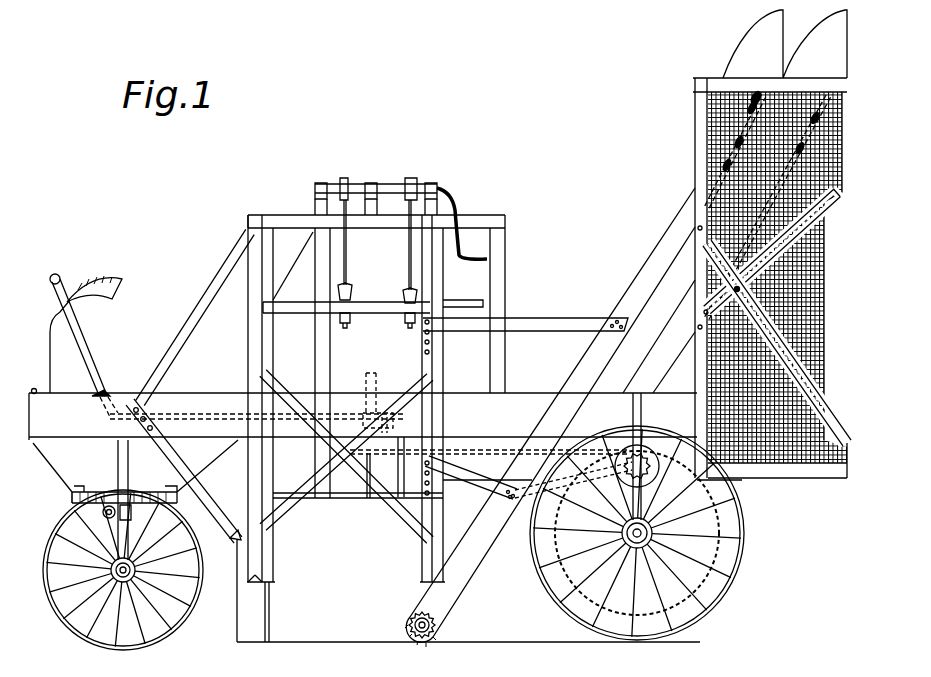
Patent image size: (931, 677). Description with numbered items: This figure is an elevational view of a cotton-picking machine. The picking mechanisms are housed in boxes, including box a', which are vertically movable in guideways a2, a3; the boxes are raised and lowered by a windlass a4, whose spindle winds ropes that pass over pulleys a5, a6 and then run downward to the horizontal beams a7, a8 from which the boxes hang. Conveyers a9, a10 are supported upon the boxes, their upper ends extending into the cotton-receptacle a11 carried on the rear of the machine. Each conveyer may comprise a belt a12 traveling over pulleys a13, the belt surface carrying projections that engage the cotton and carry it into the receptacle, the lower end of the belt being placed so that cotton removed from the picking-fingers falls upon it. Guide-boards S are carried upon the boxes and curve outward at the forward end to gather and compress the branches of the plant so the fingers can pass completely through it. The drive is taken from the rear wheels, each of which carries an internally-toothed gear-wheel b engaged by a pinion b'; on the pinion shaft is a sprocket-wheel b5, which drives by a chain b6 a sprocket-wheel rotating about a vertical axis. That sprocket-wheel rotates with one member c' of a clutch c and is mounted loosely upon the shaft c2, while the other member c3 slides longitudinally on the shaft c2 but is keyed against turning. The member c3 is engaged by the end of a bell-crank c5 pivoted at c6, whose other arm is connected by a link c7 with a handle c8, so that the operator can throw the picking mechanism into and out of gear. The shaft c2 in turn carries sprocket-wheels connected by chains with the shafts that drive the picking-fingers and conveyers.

The box a' is at (385, 428).
The guideway a2 is at (278, 580).
The guideway a3 is at (421, 586).
The windlass a4 is at (390, 184).
The pulley a5 is at (349, 180).
The pulley a6 is at (418, 182).
The horizontal beam a7 is at (363, 301).
The horizontal beam a8 is at (458, 303).
The conveyer a9 is at (643, 297).
The conveyer a10 is at (741, 242).
The cotton-receptacle a11 is at (772, 244).
The belt a12 is at (447, 616).
The pulley a13 is at (421, 638).
The internally-toothed gear-wheel b is at (652, 533).
The pinion b' is at (652, 437).
The sprocket-wheel b5 is at (640, 440).
The chain b6 is at (524, 520).
The guide-board S is at (468, 620).
The clutch c is at (490, 435).
The clutch member c' is at (391, 467).
The shaft c2 is at (392, 410).
The clutch member c3 is at (388, 406).
The bell-crank c5 is at (372, 394).
The pivot c6 is at (368, 412).
The link c7 is at (202, 412).
The handle c8 is at (68, 281).